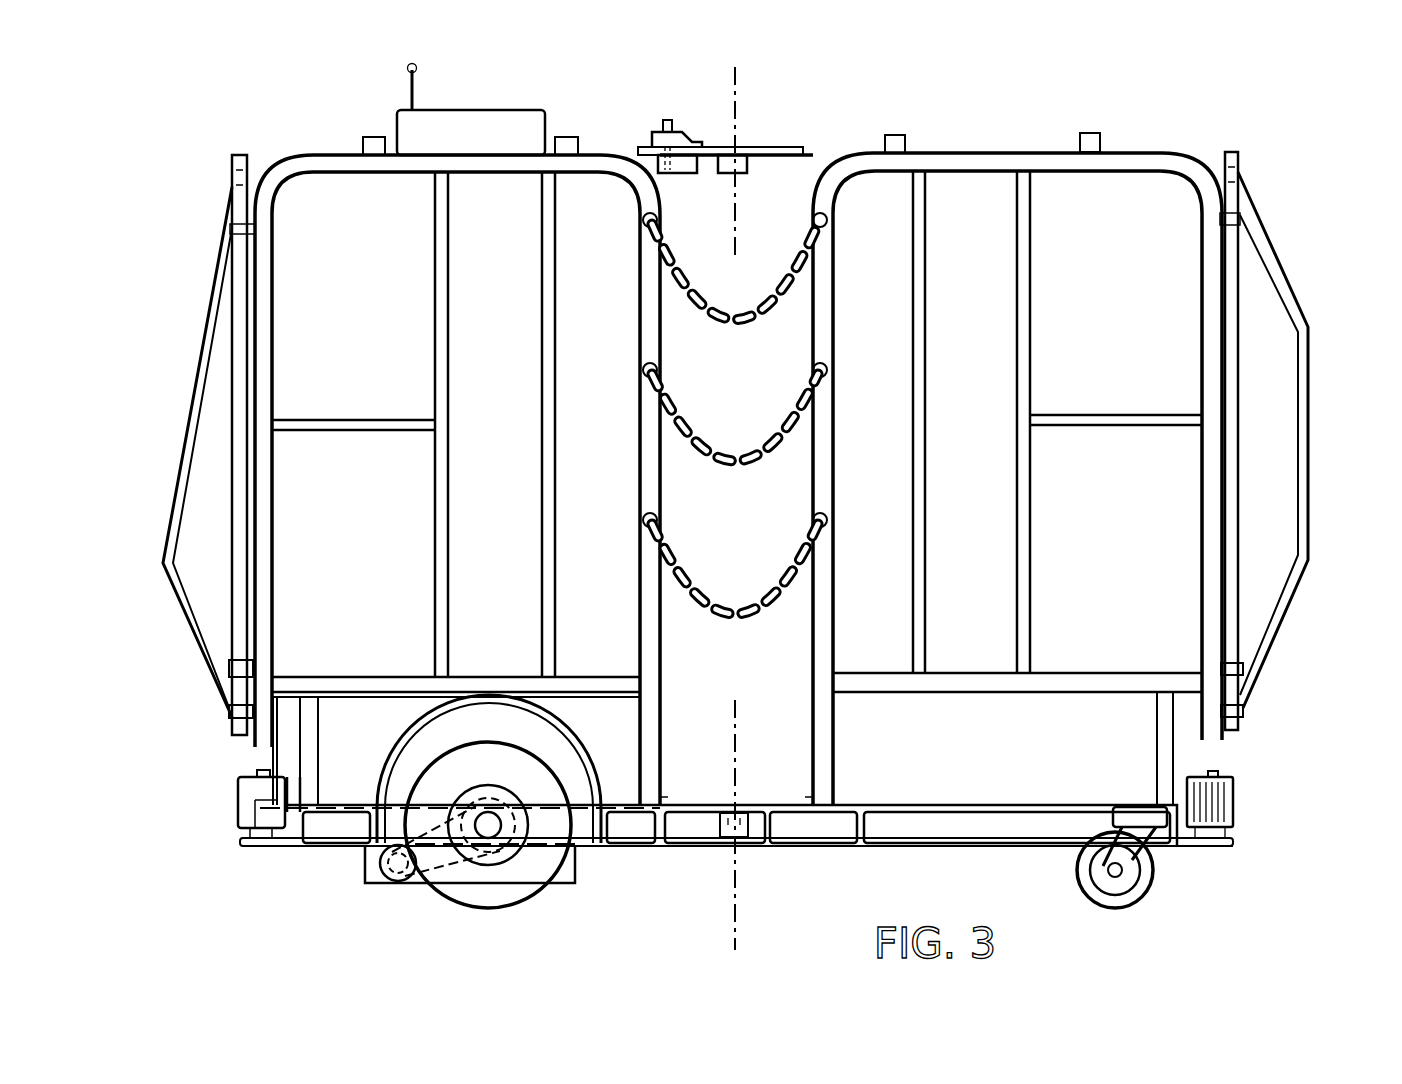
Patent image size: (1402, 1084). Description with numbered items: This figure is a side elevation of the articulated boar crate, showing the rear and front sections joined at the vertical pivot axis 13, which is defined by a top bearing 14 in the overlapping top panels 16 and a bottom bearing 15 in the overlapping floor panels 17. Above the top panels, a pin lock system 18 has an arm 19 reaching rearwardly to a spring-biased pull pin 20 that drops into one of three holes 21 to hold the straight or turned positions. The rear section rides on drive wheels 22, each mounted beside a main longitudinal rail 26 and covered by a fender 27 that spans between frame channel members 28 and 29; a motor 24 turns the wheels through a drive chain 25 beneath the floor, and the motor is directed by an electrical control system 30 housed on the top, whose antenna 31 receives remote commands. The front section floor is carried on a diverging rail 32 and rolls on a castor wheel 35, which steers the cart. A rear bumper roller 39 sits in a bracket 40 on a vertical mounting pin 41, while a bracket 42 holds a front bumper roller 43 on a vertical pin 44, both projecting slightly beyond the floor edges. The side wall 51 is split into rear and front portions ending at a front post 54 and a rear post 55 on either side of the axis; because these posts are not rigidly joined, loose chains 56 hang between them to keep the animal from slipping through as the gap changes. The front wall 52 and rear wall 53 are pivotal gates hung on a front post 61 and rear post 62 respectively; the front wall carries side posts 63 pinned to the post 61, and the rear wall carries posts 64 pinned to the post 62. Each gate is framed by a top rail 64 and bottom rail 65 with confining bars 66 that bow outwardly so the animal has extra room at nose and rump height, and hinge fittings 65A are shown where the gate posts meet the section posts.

The vertical pivot axis 13 is at (740, 113).
The top bearing 14 is at (755, 165).
The bottom bearing 15 is at (745, 835).
The top panels 16 is at (835, 150).
The floor panels 17 is at (780, 800).
The pin lock system 18 is at (680, 105).
The arm 19 is at (695, 128).
The pull pin 20 is at (660, 128).
The holes 21 is at (678, 175).
The drive wheels 22 is at (500, 885).
The motor 24 is at (365, 885).
The drive chain 25 is at (458, 870).
The main longitudinal rail 26 is at (690, 830).
The fender 27 is at (415, 718).
The frame channel member 28 is at (315, 835).
The frame channel member 29 is at (640, 825).
The electrical control system 30 is at (395, 125).
The antenna 31 is at (413, 95).
The rail 32 is at (965, 830).
The castor wheel 35 is at (1160, 870).
The bumper roller 39 is at (238, 790).
The bracket 40 is at (240, 843).
The vertical mounting pin 41 is at (258, 773).
The bracket 42 is at (1237, 842).
The front bumper roller 43 is at (1235, 790).
The vertical pin 44 is at (1218, 775).
The side wall 51 is at (965, 655).
The front wall 52 is at (1302, 280).
The rear wall 53 is at (195, 335).
The front post 54 is at (645, 445).
The rear post 55 is at (822, 462).
The chains 56 is at (725, 324).
The front post 61 is at (1205, 318).
The rear post 62 is at (270, 355).
The side posts 63 is at (1248, 455).
The top rail 64 is at (225, 490).
The bottom rail 65 is at (238, 185).
The hinge 65A is at (230, 720).
The confining bars 66 is at (200, 470).